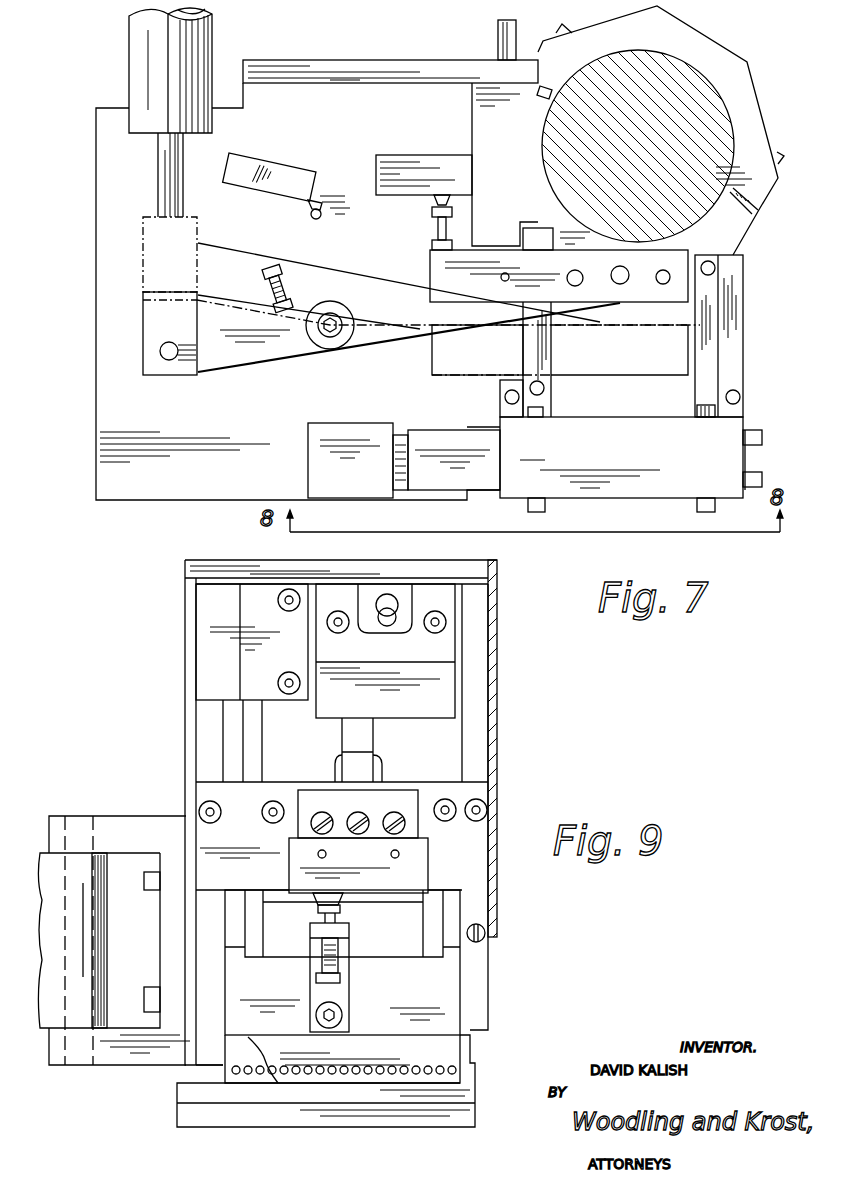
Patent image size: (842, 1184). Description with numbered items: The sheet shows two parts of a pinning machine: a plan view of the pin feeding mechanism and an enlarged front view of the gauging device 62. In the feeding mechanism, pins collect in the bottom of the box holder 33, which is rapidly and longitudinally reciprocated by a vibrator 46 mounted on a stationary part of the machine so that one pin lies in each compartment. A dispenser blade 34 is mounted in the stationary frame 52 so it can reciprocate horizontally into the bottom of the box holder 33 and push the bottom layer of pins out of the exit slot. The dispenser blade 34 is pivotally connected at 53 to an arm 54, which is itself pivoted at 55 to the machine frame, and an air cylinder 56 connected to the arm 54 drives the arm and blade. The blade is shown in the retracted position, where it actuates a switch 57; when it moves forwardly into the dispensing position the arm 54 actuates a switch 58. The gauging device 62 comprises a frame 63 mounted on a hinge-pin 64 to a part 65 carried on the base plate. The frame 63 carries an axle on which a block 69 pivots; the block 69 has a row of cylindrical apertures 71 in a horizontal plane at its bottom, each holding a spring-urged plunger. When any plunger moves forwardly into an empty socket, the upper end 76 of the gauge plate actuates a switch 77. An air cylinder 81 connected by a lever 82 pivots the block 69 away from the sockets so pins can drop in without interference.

In FIG. 7, the box holder 33 is at (660, 497).
In FIG. 7, the dispenser blade 34 is at (616, 412).
In FIG. 7, the vibrator 46 is at (315, 460).
In FIG. 7, the stationary frame 52 is at (713, 347).
In FIG. 7, the pivotal connection 53 is at (624, 286).
In FIG. 7, the arm 54 is at (393, 337).
In FIG. 7, the pivot 55 is at (340, 340).
In FIG. 7, the air cylinder 56 is at (200, 67).
In FIG. 7, the switch 57 is at (405, 190).
In FIG. 7, the switch 58 is at (243, 184).
In FIG. 9, the gauging device 62 is at (530, 766).
In FIG. 9, the frame 63 is at (206, 1030).
In FIG. 9, the hinge-pin 64 is at (95, 826).
In FIG. 9, the part 65 is at (100, 946).
In FIG. 9, the block 69 is at (450, 1003).
In FIG. 9, the cylindrical apertures 71 is at (312, 1078).
In FIG. 9, the upper end of gauge plate 76 is at (373, 742).
In FIG. 9, the switch 77 is at (423, 700).
In FIG. 9, the air cylinder 81 is at (208, 660).
In FIG. 9, the lever 82 is at (253, 752).